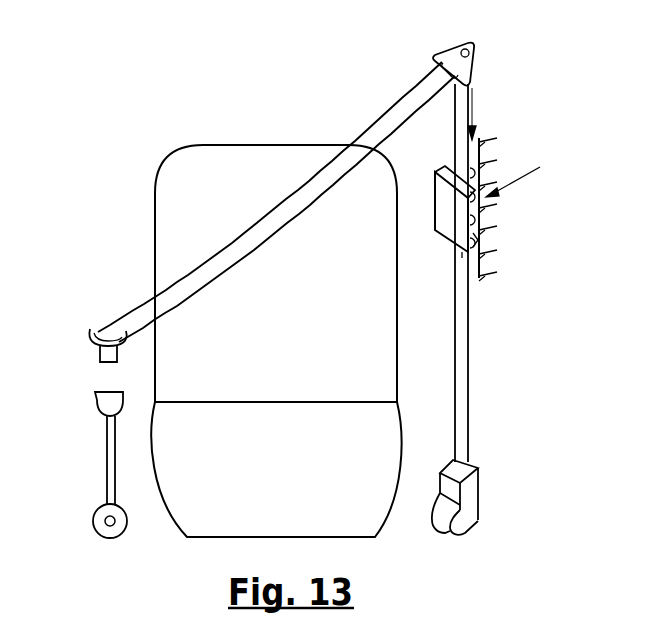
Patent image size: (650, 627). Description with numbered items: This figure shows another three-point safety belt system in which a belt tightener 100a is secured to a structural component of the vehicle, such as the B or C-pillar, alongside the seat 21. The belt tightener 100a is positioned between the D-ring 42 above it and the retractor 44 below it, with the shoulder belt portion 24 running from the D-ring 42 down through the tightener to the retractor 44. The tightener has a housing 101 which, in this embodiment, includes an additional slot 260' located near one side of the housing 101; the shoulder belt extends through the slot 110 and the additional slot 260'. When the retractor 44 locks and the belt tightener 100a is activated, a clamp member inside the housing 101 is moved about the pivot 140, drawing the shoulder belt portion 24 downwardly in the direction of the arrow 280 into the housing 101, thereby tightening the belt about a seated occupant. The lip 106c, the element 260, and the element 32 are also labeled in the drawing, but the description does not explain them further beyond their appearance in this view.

The seat 21 is at (208, 160).
The shoulder belt portion 24 is at (137, 307).
The D-ring 42 is at (443, 48).
The arrow 280 is at (476, 108).
The slot 110 is at (476, 143).
The belt tightener 100a is at (540, 175).
The housing 101 is at (450, 213).
The housing lip 106c is at (441, 173).
The pawl 260 is at (526, 208).
The pivot 140 is at (478, 237).
The additional slot 260' is at (432, 283).
The retractor 44 is at (475, 493).
The gauge 32 is at (88, 403).